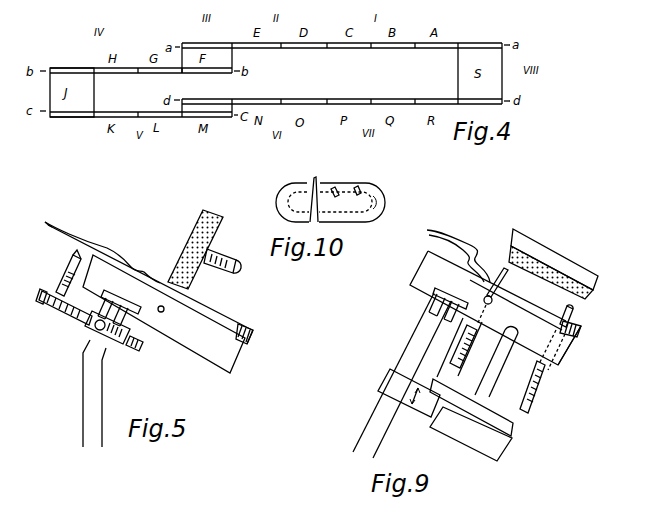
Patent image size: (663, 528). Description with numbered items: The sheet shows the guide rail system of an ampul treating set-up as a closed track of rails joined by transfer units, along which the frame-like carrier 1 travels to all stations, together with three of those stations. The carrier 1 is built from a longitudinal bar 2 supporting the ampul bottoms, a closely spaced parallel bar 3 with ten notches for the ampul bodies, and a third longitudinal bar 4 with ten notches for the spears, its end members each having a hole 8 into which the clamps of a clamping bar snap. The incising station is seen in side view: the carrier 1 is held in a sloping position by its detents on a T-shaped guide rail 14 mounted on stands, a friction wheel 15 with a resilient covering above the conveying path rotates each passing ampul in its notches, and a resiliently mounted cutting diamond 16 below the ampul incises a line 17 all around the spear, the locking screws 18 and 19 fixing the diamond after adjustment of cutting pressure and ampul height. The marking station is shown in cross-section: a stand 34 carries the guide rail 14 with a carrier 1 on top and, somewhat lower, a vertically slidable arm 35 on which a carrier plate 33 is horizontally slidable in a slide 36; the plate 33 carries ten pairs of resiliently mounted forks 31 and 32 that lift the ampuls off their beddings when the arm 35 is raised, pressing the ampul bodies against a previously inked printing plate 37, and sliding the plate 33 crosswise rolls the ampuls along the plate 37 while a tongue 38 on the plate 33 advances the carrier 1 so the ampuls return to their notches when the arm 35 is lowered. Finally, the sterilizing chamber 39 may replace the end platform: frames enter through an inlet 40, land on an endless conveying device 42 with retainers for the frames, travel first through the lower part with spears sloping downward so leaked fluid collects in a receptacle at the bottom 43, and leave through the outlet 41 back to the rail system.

In FIG. 5, the frame-like carrier 1 is at (233, 357).
In FIG. 9, the frame-like carrier 1 is at (560, 361).
In FIG. 5, the longitudinal bar 2 is at (254, 333).
In FIG. 9, the longitudinal bar 2 is at (582, 331).
In FIG. 5, the parallel bar 3 is at (246, 326).
In FIG. 9, the parallel bar 3 is at (585, 325).
In FIG. 5, the third longitudinal bar 4 is at (104, 263).
In FIG. 9, the third longitudinal bar 4 is at (431, 249).
In FIG. 5, the hole 8 is at (161, 317).
In FIG. 5, the guide rail 14 is at (124, 297).
In FIG. 9, the guide rail 14 is at (446, 305).
In FIG. 5, the friction wheel 15 is at (183, 259).
In FIG. 5, the cutting diamond 16 is at (75, 256).
In FIG. 5, the incised line 17 is at (83, 252).
In FIG. 5, the locking screw 18 is at (137, 351).
In FIG. 5, the locking screw 19 is at (96, 327).
In FIG. 9, the fork 31 is at (500, 264).
In FIG. 9, the fork 32 is at (573, 310).
In FIG. 9, the carrier plate 33 is at (515, 428).
In FIG. 9, the stand 34 is at (378, 413).
In FIG. 9, the vertically slidable arm 35 is at (392, 377).
In FIG. 9, the slide 36 is at (478, 430).
In FIG. 9, the printing plate 37 is at (582, 294).
In FIG. 9, the tongue 38 is at (497, 365).
In FIG. 10, the sterilizing chamber 39 is at (378, 190).
In FIG. 10, the inlet 40 is at (358, 187).
In FIG. 10, the outlet 41 is at (336, 188).
In FIG. 10, the endless conveying device 42 is at (318, 186).
In FIG. 10, the bottom 43 is at (359, 222).